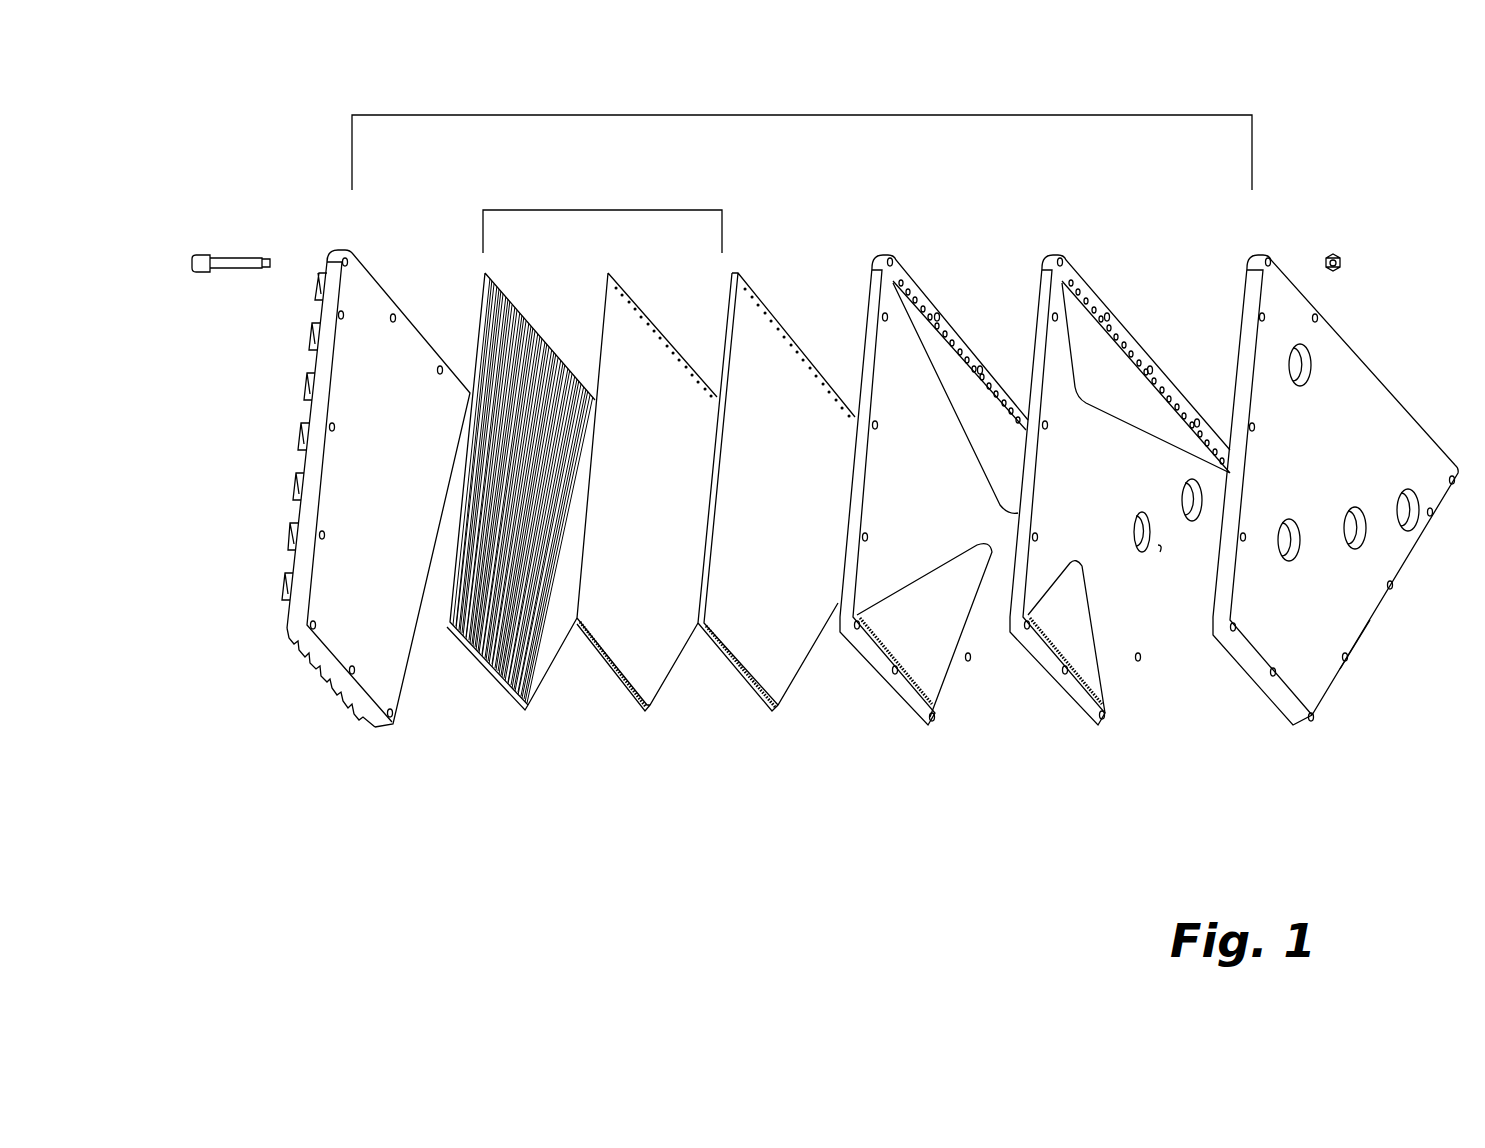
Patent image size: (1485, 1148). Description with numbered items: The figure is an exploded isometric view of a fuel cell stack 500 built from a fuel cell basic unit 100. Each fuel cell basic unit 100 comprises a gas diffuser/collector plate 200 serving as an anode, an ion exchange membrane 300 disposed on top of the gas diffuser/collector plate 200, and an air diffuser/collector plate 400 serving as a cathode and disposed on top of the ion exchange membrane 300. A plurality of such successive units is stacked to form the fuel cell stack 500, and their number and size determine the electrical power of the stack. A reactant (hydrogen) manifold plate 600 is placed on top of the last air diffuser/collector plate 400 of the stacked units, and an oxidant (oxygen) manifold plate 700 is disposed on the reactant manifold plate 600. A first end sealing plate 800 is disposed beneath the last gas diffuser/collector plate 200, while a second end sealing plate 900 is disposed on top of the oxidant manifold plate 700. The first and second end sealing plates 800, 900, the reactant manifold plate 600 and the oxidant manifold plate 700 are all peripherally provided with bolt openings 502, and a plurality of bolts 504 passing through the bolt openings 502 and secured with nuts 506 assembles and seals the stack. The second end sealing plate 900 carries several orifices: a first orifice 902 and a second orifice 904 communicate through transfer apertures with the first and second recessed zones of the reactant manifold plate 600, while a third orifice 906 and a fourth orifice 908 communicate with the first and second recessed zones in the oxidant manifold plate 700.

The fuel cell basic unit 100 is at (602, 210).
The gas diffuser/collector plate 200 is at (528, 707).
The ion exchange membrane 300 is at (648, 638).
The air diffuser/collector plate 400 is at (785, 640).
The fuel cell stack 500 is at (802, 131).
The bolt openings 502 is at (1348, 660).
The bolts 504 is at (235, 264).
The nuts 506 is at (1340, 270).
The reactant manifold plate 600 is at (952, 603).
The oxidant manifold plate 700 is at (1083, 520).
The first end sealing plate 800 is at (385, 657).
The second end sealing plate 900 is at (1317, 561).
The first orifice 902 is at (1405, 490).
The second orifice 904 is at (1367, 540).
The third orifice 906 is at (1312, 367).
The fourth orifice 908 is at (1295, 553).